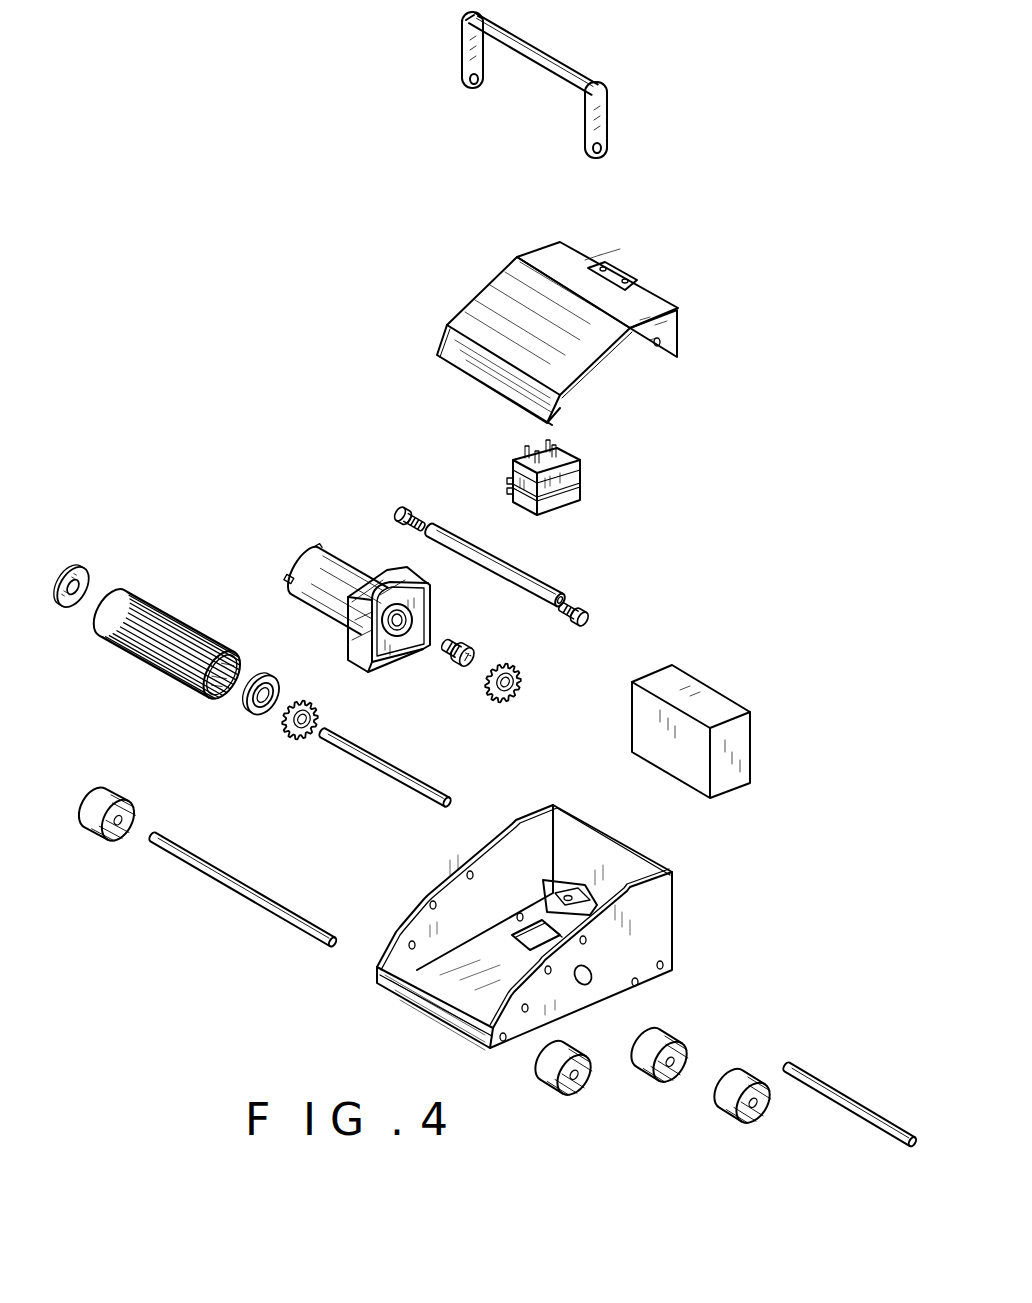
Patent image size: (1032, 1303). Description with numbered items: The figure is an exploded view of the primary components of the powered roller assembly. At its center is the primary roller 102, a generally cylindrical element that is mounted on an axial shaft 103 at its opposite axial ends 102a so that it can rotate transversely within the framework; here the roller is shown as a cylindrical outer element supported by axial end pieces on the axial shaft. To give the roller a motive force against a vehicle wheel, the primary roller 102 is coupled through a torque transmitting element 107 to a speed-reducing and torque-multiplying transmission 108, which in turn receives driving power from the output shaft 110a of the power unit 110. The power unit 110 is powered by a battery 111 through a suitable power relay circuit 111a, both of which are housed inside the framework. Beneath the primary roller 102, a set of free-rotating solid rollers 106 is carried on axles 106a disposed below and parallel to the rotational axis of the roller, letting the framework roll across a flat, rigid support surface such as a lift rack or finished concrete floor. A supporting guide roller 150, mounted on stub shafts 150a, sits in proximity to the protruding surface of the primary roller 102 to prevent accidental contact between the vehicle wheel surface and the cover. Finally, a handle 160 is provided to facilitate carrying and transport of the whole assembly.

The handle 160 is at (548, 55).
The power relay circuit 111a is at (580, 477).
The supporting guide roller 150 is at (537, 577).
The stub shafts 150a is at (402, 510).
The power unit 110 is at (332, 558).
The speed-reducing and torque-multiplying transmission 108 is at (347, 643).
The output shaft 110a is at (455, 667).
The torque transmitting element 107 is at (497, 702).
The axial ends 102a is at (68, 615).
The primary roller 102 is at (157, 667).
The axial shaft 103 is at (413, 795).
The free-rotating solid rollers 106 is at (92, 833).
The axles 106a is at (257, 903).
The battery 111 is at (728, 792).